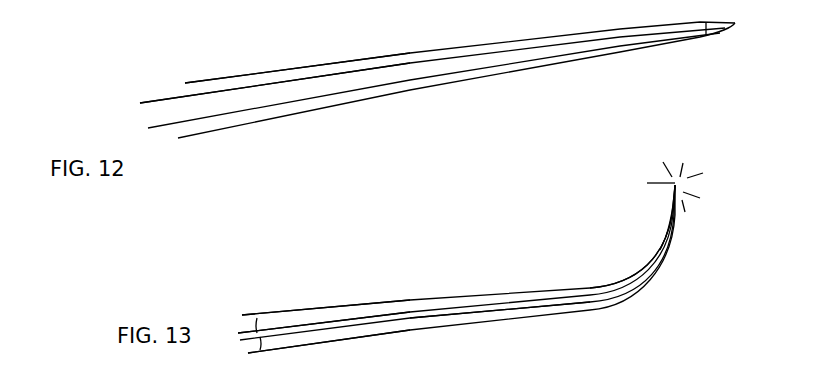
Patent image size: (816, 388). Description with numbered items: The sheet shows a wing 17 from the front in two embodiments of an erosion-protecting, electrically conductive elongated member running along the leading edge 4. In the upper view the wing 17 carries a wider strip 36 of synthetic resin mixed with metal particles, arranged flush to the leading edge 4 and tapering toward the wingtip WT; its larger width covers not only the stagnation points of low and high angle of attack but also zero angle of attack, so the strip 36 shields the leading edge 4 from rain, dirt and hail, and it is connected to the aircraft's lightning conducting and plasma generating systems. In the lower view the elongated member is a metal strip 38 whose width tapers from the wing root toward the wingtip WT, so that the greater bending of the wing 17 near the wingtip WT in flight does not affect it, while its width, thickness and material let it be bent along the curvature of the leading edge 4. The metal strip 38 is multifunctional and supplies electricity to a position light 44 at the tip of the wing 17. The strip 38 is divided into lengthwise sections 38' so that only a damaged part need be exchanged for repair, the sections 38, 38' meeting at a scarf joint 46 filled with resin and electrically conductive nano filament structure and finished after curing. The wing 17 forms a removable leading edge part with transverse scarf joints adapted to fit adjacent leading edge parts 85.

In FIG. 12, the wing 17 is at (430, 38).
In FIG. 13, the wing 17 is at (433, 268).
In FIG. 12, the strip 36 is at (255, 97).
In FIG. 12, the leading edge 4 is at (333, 60).
In FIG. 13, the leading edge 4 is at (532, 324).
In FIG. 13, the position light 44 is at (632, 198).
In FIG. 13, the wingtip WT is at (586, 210).
In FIG. 13, the metal strip 38 is at (631, 252).
In FIG. 13, the adjacent leading edge parts 85 is at (292, 296).
In FIG. 13, the lengthwise sections 38' is at (324, 303).
In FIG. 13, the scarf joint 46 is at (434, 334).